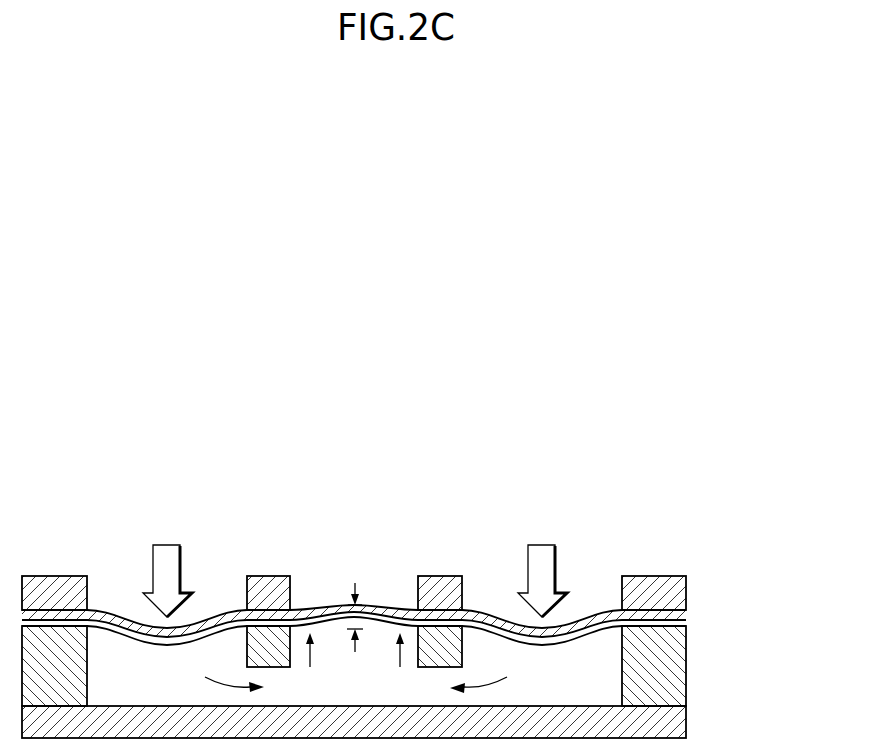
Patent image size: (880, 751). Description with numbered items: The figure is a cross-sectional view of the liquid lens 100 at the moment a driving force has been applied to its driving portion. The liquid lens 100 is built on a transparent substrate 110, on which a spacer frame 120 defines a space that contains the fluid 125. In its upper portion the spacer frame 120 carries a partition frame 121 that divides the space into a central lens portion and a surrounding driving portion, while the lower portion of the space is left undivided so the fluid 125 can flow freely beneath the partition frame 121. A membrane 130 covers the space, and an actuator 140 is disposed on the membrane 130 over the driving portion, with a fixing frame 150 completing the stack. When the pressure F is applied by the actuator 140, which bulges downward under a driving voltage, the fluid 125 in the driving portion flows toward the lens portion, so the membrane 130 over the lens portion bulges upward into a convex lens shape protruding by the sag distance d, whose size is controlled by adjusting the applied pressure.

The liquid lens 100 is at (717, 478).
The substrate 110 is at (687, 730).
The spacer frame 120 is at (687, 685).
The partition frame 121 is at (450, 643).
The fluid 125 is at (437, 700).
The membrane 130 is at (687, 628).
The actuator 140 is at (687, 613).
The fixing frame 150 is at (687, 576).